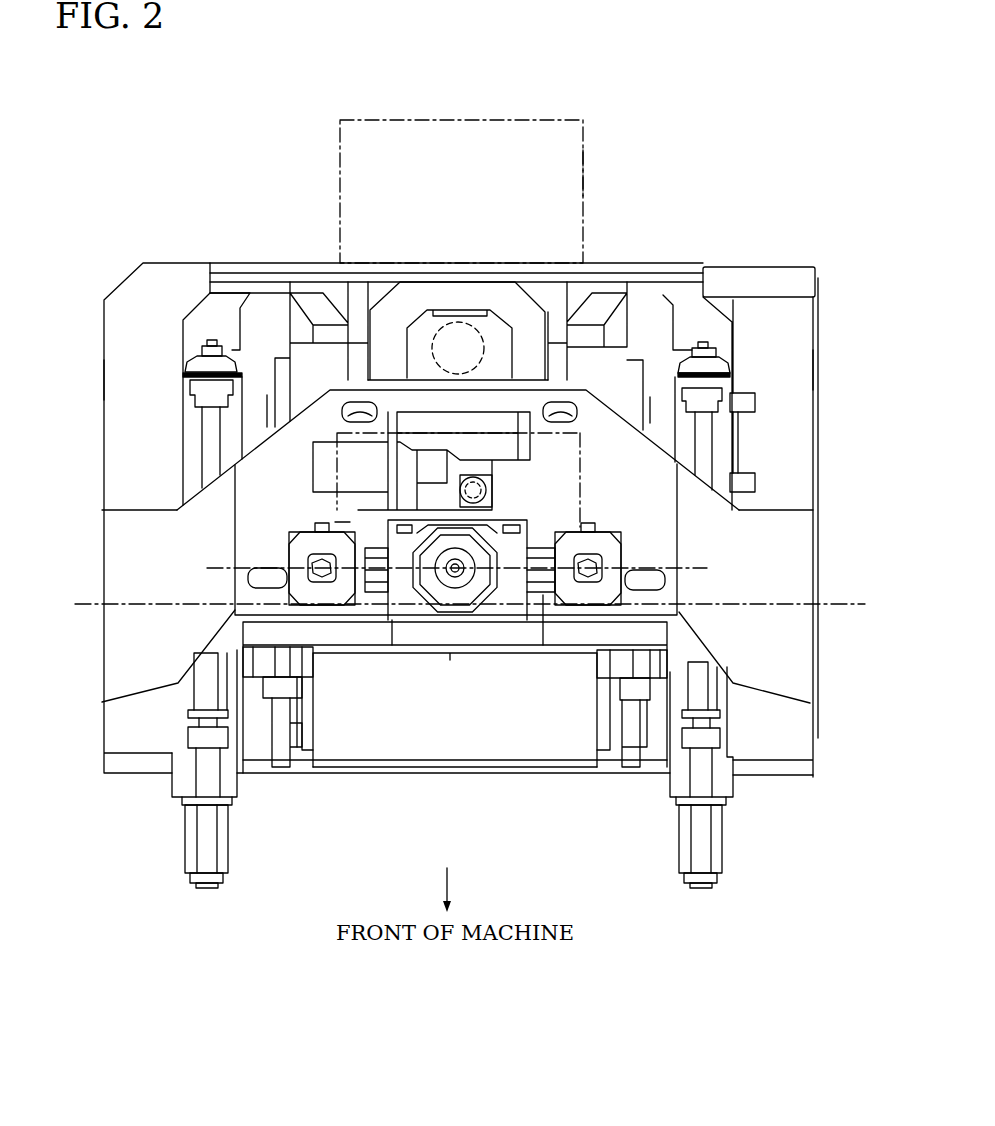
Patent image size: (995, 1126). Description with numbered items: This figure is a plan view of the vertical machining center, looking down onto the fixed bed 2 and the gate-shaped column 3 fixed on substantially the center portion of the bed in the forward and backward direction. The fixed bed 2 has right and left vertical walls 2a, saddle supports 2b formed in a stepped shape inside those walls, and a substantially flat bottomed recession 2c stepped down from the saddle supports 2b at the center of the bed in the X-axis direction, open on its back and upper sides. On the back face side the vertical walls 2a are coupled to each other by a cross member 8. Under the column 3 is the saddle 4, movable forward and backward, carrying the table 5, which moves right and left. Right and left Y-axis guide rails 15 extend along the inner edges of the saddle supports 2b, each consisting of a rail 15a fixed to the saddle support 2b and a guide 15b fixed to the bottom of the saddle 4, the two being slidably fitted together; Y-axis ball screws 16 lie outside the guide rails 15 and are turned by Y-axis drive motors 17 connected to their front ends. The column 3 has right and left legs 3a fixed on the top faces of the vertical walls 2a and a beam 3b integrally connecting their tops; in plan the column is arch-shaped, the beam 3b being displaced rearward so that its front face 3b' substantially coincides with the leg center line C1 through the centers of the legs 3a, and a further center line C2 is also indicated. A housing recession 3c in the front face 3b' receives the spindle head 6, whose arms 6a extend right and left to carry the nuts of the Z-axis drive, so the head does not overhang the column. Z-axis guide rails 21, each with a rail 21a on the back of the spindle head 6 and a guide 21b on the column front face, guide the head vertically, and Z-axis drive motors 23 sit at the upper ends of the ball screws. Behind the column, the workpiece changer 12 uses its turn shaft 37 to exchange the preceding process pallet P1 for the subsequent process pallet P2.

The fixed bed 2 is at (98, 342).
The vertical wall 2a is at (108, 385).
The saddle support 2b is at (250, 757).
The bottomed recession 2c is at (513, 760).
The column 3 is at (138, 498).
The leg 3a is at (104, 507).
The beam 3b is at (456, 421).
The front face of the beam 3b' is at (456, 632).
The housing recession 3c is at (340, 522).
The saddle 4 is at (470, 660).
The table 5 is at (443, 655).
The spindle head 6 is at (497, 620).
The arm 6a is at (392, 622).
The cross member 8 is at (270, 262).
The workpiece changer 12 is at (316, 188).
The Y-axis guide rail 15 is at (377, 690).
The rail 15a is at (290, 727).
The guide 15b is at (290, 685).
The Y-axis ball screw 16 is at (200, 438).
The Y-axis drive motor 17 is at (183, 840).
The Z-axis guide rail 21 is at (580, 470).
The rail 21a is at (510, 525).
The guide 21b is at (531, 525).
The Z-axis drive motor 23 is at (302, 545).
The turn shaft 37 is at (490, 323).
The leg center line C1 is at (90, 603).
The spindle axis C2 is at (220, 566).
The preceding process pallet P1 is at (580, 487).
The subsequent process pallet P2 is at (585, 175).